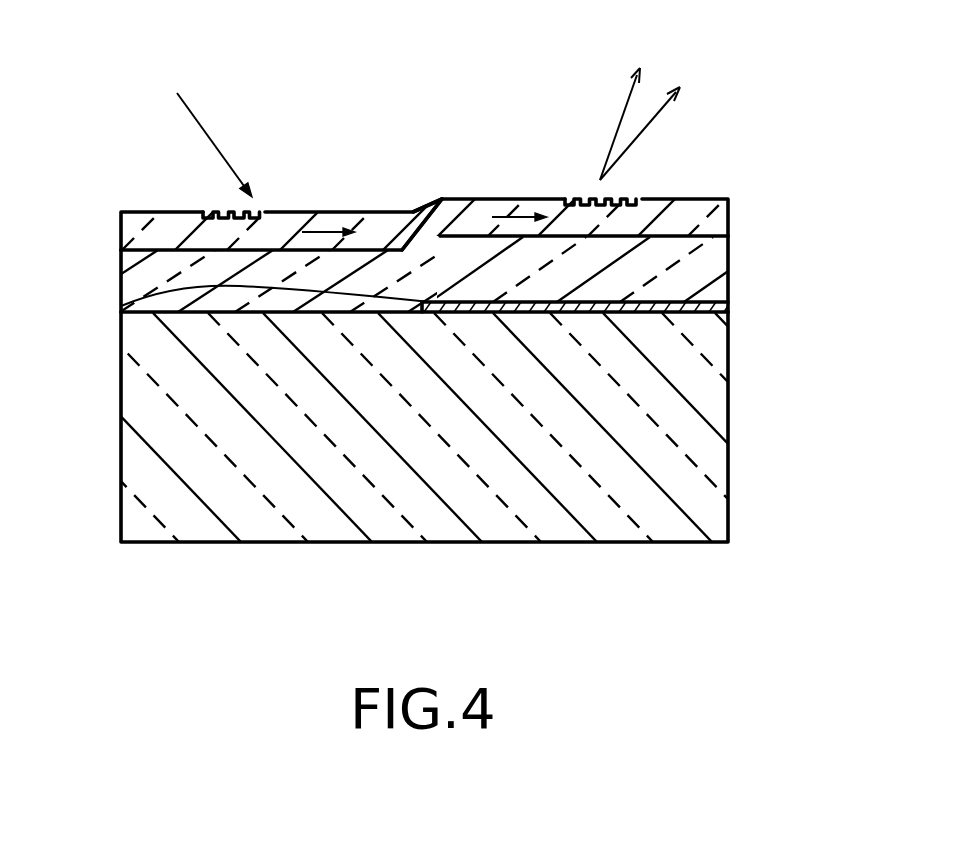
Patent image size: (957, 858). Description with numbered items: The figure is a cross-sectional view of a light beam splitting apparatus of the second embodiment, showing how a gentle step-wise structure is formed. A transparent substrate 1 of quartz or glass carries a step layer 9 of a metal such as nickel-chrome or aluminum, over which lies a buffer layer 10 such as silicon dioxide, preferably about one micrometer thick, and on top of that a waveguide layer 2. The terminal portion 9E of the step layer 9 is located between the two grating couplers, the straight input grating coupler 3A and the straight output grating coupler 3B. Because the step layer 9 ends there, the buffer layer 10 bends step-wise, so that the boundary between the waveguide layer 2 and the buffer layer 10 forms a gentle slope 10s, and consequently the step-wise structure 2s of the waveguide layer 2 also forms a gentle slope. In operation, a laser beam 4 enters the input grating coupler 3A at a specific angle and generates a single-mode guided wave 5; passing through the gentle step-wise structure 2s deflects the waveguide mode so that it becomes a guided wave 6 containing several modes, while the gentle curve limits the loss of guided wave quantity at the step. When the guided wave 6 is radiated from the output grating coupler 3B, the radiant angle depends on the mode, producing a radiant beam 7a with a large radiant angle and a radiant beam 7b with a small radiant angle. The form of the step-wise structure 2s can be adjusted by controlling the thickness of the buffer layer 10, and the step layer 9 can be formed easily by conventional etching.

The transparent substrate 1 is at (705, 414).
The waveguide layer 2 is at (697, 226).
The step-wise structure of the waveguide 2s is at (415, 225).
The straight input grating coupler 3A is at (268, 198).
The straight output grating coupler 3B is at (640, 188).
The laser beam 4 is at (214, 132).
The guided wave 5 is at (329, 232).
The guided wave 6 is at (527, 217).
The radiant beam having a large radiant angle 7a is at (662, 119).
The radiant beam having a small radiant angle 7b is at (632, 100).
The step layer 9 is at (716, 310).
The terminal portion of the step layer 9E is at (122, 304).
The buffer layer 10 is at (697, 276).
The step-wise structure of the boundary between the waveguide layer and the buffer l 10s is at (428, 237).